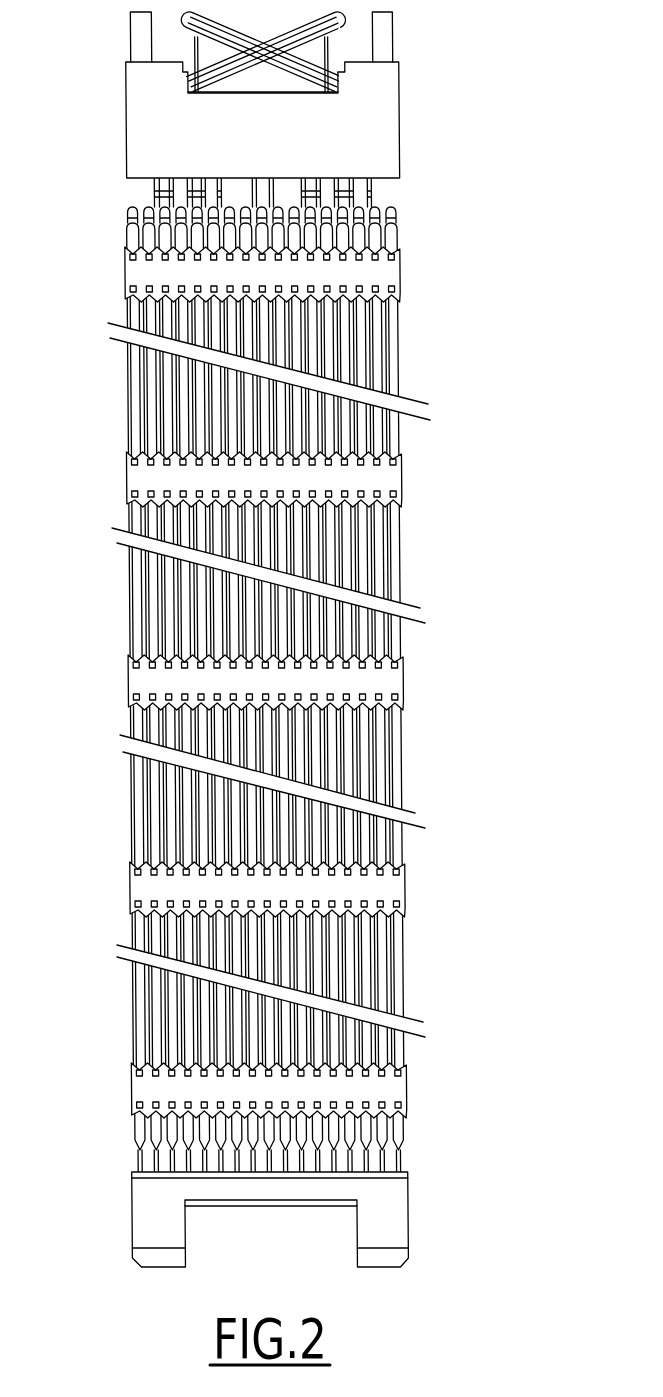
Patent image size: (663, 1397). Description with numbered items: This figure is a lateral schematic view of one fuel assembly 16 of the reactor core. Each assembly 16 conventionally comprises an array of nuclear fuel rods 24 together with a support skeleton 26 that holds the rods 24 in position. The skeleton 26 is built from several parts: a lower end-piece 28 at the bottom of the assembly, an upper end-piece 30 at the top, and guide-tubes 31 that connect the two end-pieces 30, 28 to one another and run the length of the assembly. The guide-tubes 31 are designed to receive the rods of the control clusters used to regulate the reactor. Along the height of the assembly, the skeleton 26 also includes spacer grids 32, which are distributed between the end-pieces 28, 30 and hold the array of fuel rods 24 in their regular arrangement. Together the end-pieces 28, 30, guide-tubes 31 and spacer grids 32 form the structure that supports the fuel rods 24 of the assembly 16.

The assembly 16 is at (283, 667).
The nuclear fuel rods 24 is at (268, 990).
The support skeleton 26 is at (262, 95).
The lower end-piece 28 is at (270, 1219).
The upper end-piece 30 is at (261, 218).
The guide-tubes 31 is at (269, 1142).
The spacer grids 32 is at (266, 682).